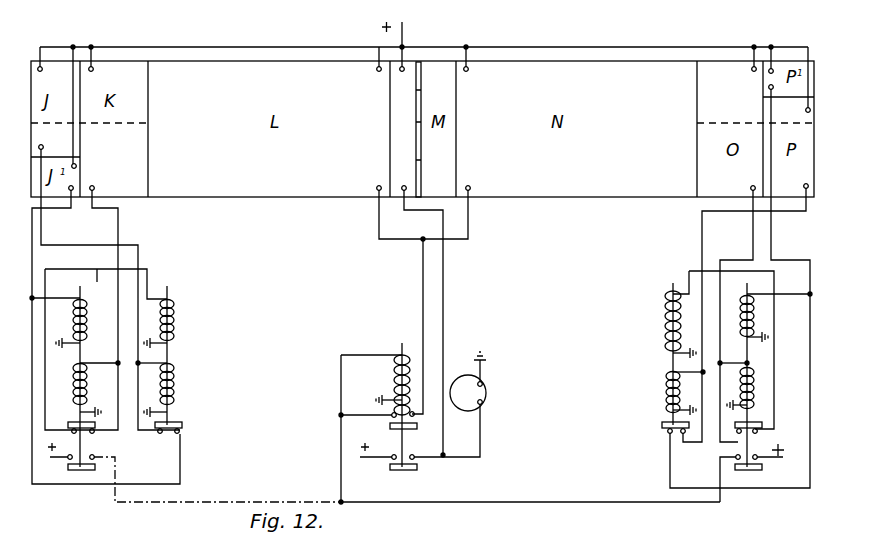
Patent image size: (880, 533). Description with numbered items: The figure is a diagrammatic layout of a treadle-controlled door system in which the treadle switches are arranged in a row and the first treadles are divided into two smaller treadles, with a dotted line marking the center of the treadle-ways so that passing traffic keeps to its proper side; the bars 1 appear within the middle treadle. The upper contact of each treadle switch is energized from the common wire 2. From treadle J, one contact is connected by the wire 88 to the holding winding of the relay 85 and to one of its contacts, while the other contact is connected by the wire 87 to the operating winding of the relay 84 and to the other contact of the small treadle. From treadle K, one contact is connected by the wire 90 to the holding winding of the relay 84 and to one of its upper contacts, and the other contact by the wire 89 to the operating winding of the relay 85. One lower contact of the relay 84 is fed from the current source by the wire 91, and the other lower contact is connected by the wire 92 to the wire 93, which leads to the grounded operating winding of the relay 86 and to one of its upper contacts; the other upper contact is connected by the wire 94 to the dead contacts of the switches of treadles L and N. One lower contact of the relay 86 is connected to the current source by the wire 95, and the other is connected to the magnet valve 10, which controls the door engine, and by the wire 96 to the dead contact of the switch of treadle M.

The bar 1 is at (432, 145).
The common wire 2 is at (403, 30).
The control device 10 is at (486, 393).
The relay 84 is at (106, 336).
The relay 85 is at (200, 336).
The relay 86 is at (409, 346).
The wire 87 is at (68, 487).
The wire 88 is at (138, 254).
The wire 89 is at (99, 285).
The wire 90 is at (118, 228).
The wire 91 is at (66, 460).
The wire 92 is at (372, 503).
The wire 93 is at (341, 437).
The wire 94 is at (423, 309).
The wire 95 is at (368, 461).
The wire 96 is at (442, 340).